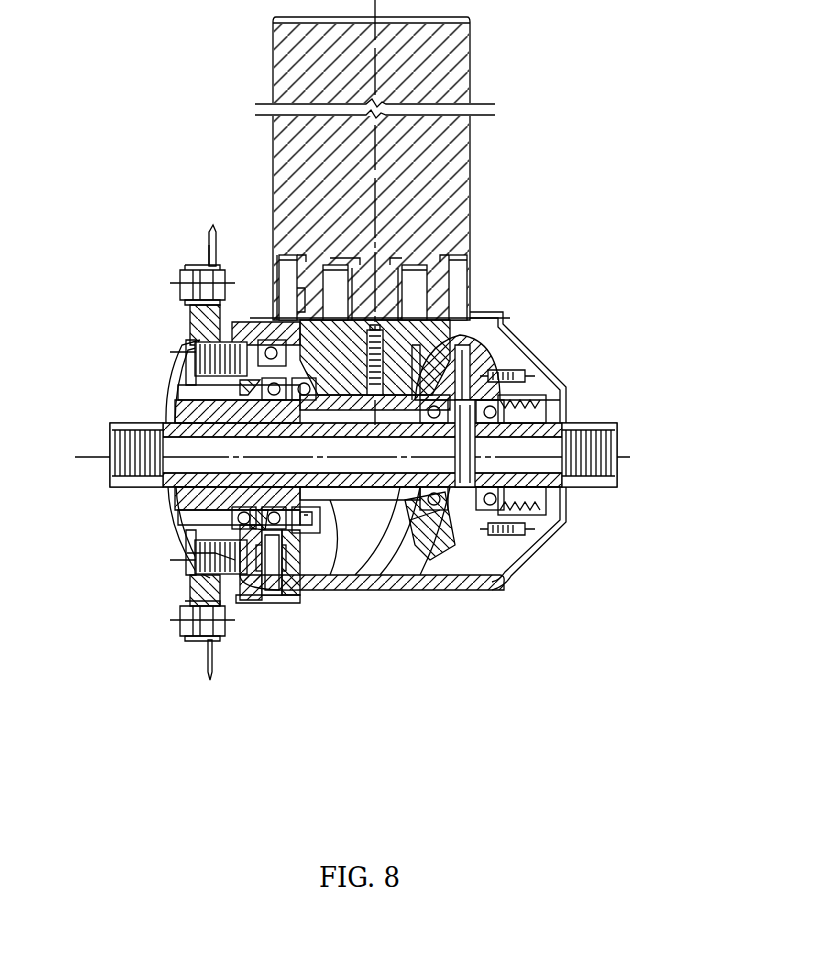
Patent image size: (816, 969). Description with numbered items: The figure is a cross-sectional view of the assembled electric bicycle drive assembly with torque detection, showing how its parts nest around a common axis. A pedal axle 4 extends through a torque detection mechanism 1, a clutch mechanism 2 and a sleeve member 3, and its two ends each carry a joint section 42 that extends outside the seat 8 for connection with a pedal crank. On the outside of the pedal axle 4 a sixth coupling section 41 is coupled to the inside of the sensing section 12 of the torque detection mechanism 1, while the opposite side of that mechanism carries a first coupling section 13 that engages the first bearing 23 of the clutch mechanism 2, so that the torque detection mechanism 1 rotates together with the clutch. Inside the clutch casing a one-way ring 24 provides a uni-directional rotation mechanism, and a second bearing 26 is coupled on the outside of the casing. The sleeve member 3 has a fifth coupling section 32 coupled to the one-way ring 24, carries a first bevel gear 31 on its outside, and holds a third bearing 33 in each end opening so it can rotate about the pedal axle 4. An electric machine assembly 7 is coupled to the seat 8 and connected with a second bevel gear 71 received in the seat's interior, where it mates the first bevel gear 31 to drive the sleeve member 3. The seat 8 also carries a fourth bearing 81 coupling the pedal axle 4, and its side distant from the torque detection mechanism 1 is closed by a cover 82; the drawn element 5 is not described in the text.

The torque detection mechanism 1 is at (178, 375).
The clutch mechanism 2 is at (248, 330).
The sleeve member 3 is at (367, 507).
The pedal axle 4 is at (335, 580).
The pawl 5 is at (213, 245).
The electric machine assembly 7 is at (470, 178).
The seat 8 is at (497, 318).
The sensing section 12 is at (165, 393).
The first coupling section 13 is at (187, 350).
The first bearing 23 is at (242, 600).
The one-way ring 24 is at (290, 610).
The second bearing 26 is at (268, 603).
The first bevel gear 31 is at (407, 550).
The fifth coupling section 32 is at (315, 512).
The third bearing 33 is at (187, 553).
The sixth coupling section 41 is at (170, 507).
The joint section 42 is at (113, 488).
The second bevel gear 71 is at (465, 305).
The fourth bearing 81 is at (512, 372).
The cover 82 is at (545, 400).